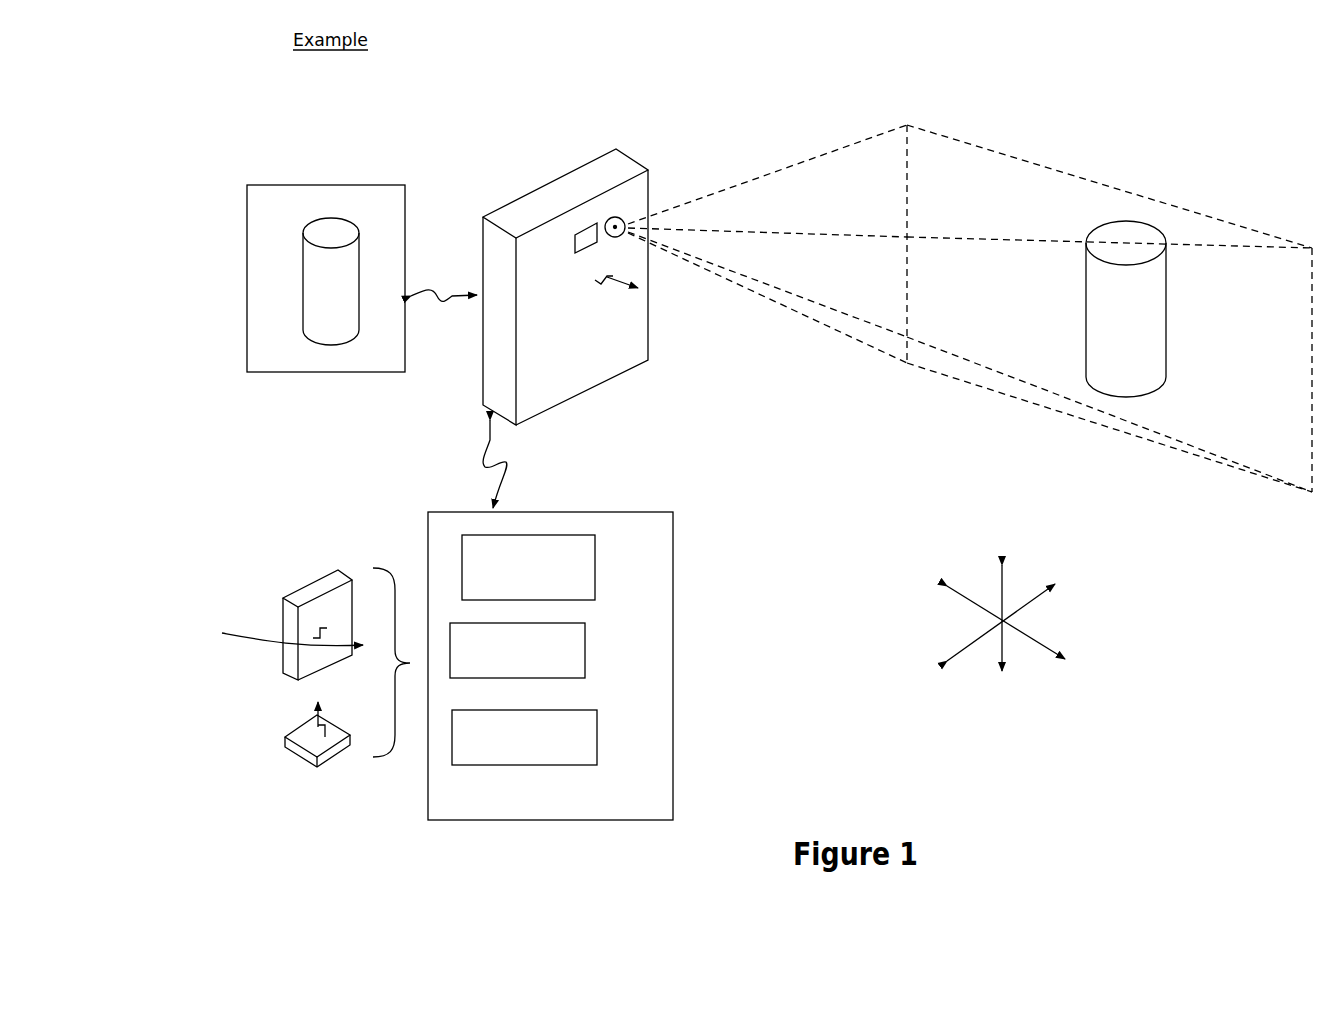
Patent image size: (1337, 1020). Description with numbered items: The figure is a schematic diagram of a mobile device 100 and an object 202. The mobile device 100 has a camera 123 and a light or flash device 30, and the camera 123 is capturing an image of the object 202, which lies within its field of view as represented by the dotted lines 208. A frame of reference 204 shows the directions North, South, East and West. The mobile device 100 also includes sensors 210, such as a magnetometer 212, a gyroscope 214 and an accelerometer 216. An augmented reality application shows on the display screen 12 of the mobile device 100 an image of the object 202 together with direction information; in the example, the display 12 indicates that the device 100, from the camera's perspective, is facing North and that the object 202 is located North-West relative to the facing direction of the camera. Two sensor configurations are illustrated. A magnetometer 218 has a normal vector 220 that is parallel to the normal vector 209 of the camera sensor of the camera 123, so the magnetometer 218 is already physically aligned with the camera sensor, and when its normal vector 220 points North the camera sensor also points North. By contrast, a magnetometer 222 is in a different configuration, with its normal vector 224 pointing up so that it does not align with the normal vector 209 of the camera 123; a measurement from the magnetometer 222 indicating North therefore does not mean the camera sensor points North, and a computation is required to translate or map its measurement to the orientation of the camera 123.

The display screen 12 is at (303, 185).
The light or flash device 30 is at (587, 230).
The mobile device 100 is at (592, 158).
The camera 123 is at (619, 217).
The object 202 is at (1142, 220).
The frame of reference 204 is at (1049, 627).
The dotted lines 208 is at (807, 312).
The normal vector 209 is at (625, 283).
The sensors 210 is at (556, 642).
The magnetometer 212 is at (596, 577).
The gyroscope 214 is at (585, 667).
The accelerometer 216 is at (598, 742).
The magnetometer 218 is at (290, 593).
The normal vector 220 is at (275, 633).
The magnetometer 222 is at (285, 737).
The normal vector 224 is at (316, 703).